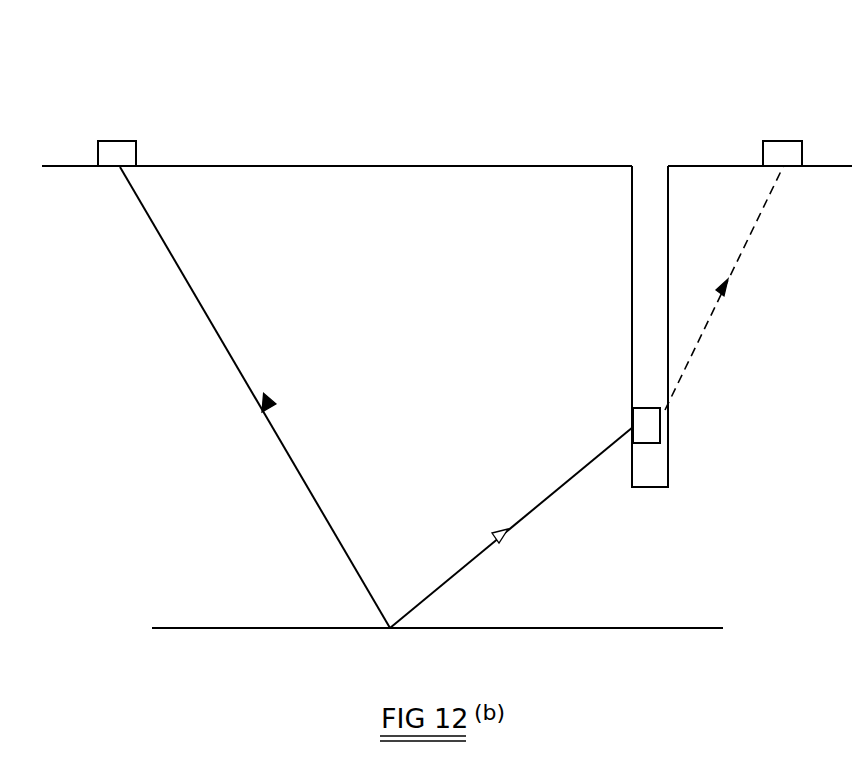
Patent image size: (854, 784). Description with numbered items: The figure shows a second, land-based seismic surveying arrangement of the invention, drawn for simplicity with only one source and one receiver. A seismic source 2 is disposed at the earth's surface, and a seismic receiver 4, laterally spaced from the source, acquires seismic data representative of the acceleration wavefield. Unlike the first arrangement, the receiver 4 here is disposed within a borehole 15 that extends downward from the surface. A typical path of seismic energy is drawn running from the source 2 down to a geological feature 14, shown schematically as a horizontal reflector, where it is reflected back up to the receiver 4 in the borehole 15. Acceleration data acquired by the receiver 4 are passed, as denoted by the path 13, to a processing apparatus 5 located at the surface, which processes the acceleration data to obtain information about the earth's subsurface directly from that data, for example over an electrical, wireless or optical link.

The seismic source 2 is at (115, 141).
The seismic receiver 4 is at (633, 420).
The processing apparatus 5 is at (782, 141).
The path 13 is at (745, 248).
The geological feature 14 is at (468, 626).
The borehole 15 is at (647, 207).